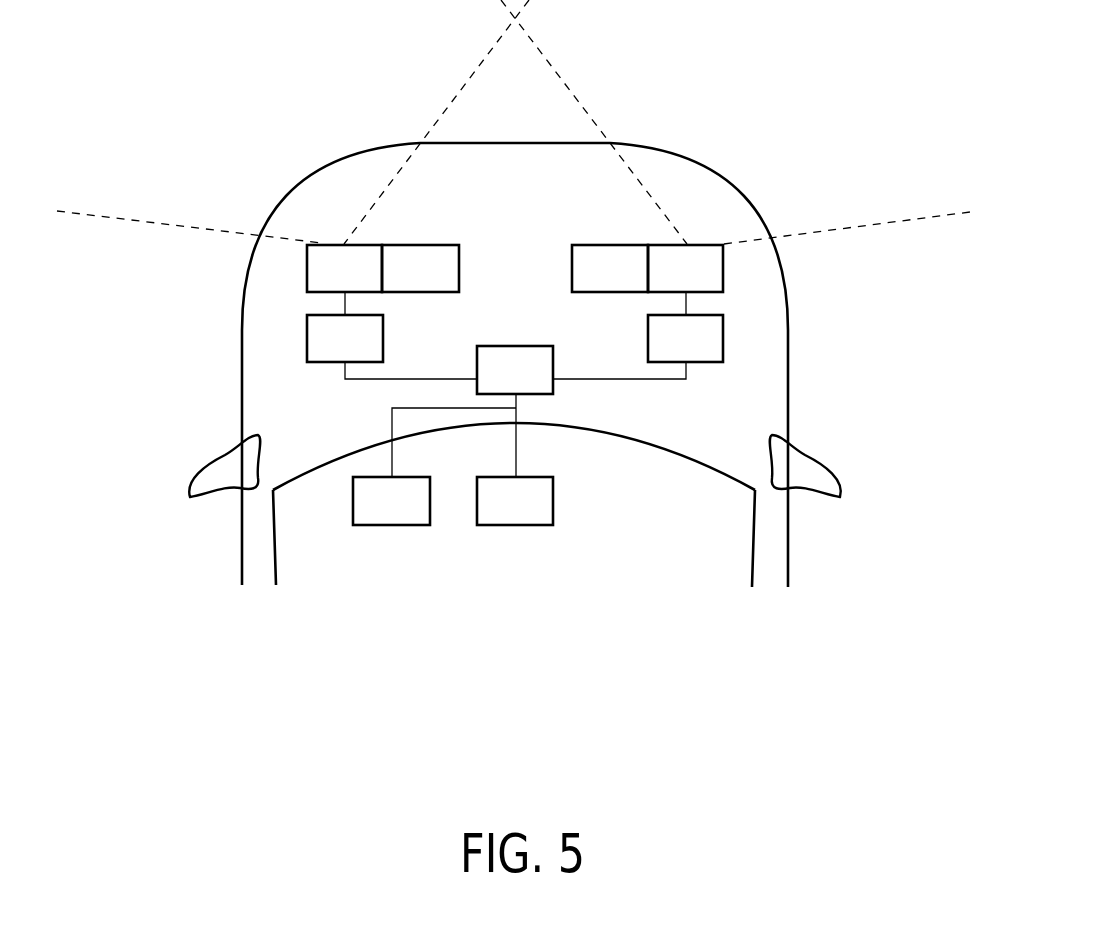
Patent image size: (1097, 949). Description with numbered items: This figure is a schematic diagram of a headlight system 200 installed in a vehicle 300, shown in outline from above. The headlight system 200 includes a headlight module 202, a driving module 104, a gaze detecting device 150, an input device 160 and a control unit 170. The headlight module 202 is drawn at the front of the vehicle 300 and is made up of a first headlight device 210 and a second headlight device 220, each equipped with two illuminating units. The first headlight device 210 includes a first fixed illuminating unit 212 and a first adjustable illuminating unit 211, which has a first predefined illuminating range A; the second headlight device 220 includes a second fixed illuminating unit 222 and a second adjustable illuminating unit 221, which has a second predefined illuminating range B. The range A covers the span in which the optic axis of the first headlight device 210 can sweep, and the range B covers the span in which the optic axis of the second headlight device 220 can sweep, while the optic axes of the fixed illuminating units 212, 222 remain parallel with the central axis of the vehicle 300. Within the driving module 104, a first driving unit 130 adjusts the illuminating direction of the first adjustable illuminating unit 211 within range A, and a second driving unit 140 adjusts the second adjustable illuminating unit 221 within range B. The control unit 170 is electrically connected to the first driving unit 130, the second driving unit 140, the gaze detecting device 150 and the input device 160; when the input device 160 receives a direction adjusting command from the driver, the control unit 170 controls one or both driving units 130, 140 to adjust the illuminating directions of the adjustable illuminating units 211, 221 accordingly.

The vehicle 300 is at (242, 383).
The headlight system 200 is at (604, 409).
The headlight module 202 is at (603, 170).
The second headlight device 220 is at (412, 218).
The first headlight device 210 is at (618, 220).
The second adjustable illuminating unit 221 is at (366, 284).
The second fixed illuminating unit 222 is at (441, 284).
The first fixed illuminating unit 212 is at (631, 284).
The first adjustable illuminating unit 211 is at (707, 284).
The second driving unit 140 is at (366, 354).
The first driving unit 130 is at (707, 354).
The driving module 104 is at (648, 336).
The control unit 170 is at (536, 385).
The gaze detecting device 150 is at (412, 516).
The input device 160 is at (536, 516).
The first predefined illuminating range A is at (662, 212).
The second predefined illuminating range B is at (368, 212).